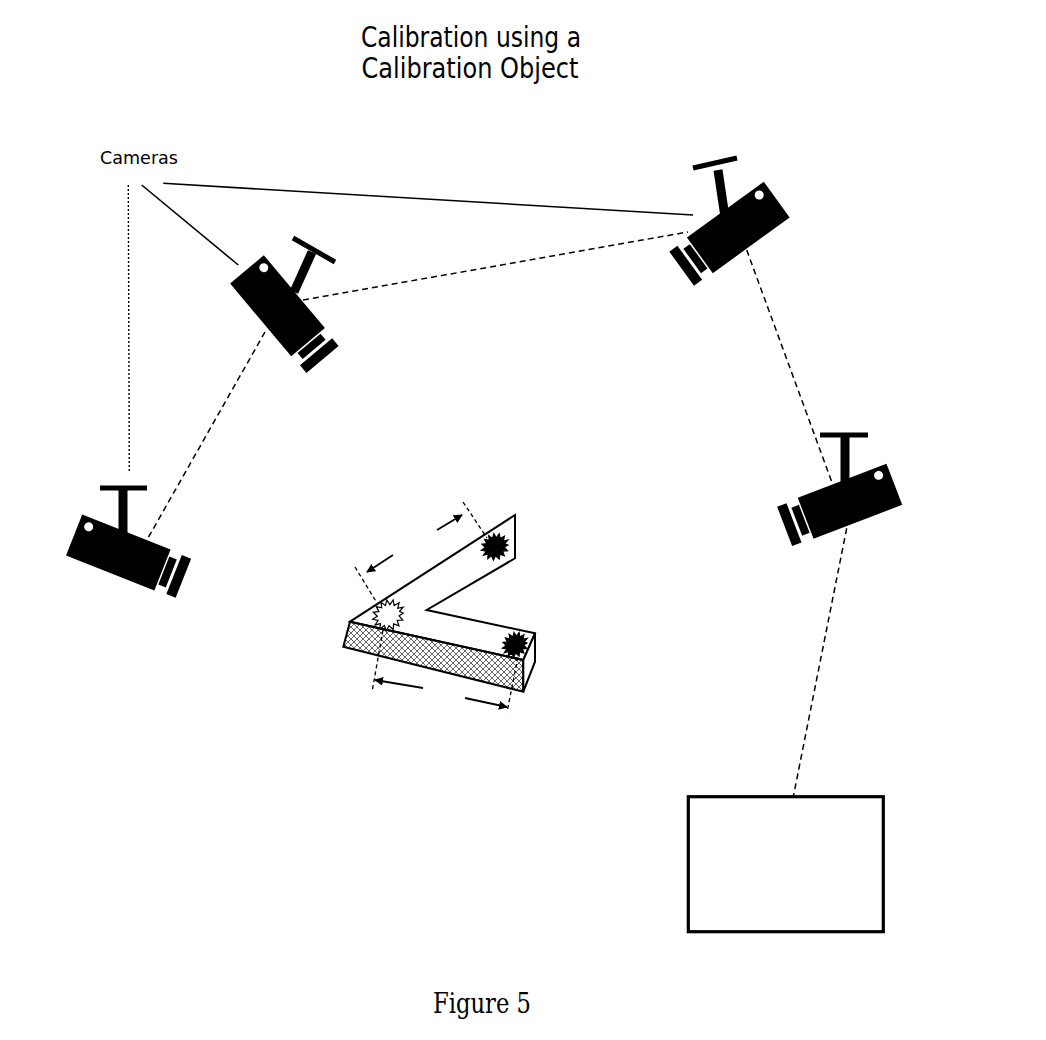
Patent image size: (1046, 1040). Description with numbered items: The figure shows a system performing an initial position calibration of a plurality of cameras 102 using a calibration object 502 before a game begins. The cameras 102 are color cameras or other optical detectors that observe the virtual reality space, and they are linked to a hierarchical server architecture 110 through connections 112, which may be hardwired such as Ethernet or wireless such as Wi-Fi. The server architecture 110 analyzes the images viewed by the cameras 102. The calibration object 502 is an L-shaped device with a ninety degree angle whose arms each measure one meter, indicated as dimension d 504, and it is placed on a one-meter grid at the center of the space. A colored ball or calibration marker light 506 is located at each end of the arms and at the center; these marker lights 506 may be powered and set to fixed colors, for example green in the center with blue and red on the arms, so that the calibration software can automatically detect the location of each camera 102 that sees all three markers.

The camera 102 is at (282, 373).
The hierarchical server architecture 110 is at (687, 837).
The connection 112 is at (588, 262).
The calibration object 502 is at (328, 630).
The dimension d 504 is at (425, 710).
The calibration marker light 506 is at (540, 640).